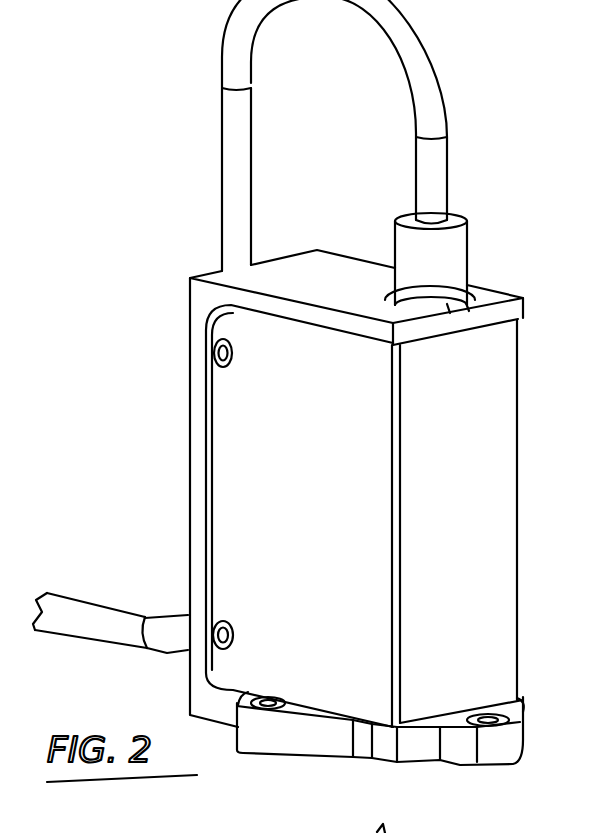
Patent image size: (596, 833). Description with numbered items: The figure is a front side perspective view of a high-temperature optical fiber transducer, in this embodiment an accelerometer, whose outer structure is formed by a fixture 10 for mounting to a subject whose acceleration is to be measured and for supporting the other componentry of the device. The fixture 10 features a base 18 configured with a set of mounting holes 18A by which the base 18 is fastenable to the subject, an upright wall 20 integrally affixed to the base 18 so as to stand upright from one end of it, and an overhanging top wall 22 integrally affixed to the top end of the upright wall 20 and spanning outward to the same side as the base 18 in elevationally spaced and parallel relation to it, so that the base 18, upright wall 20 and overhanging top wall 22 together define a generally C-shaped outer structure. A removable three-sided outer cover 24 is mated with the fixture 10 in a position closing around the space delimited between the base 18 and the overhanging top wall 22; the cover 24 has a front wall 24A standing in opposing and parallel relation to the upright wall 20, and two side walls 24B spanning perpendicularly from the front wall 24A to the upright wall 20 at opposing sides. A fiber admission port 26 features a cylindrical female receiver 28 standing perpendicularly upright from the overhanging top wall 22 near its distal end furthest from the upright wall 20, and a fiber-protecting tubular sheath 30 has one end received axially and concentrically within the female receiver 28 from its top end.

The fixture 10 is at (187, 300).
The base 18 is at (336, 742).
The mounting holes 18A is at (272, 700).
The upright wall 20 is at (198, 514).
The overhanging top wall 22 is at (323, 265).
The outer cover 24 is at (477, 501).
The front wall 24A is at (503, 424).
The side walls 24B is at (248, 443).
The fiber admission port 26 is at (452, 249).
The cylindrical female receiver 28 is at (455, 265).
The fiber-protecting tubular sheath 30 is at (430, 84).